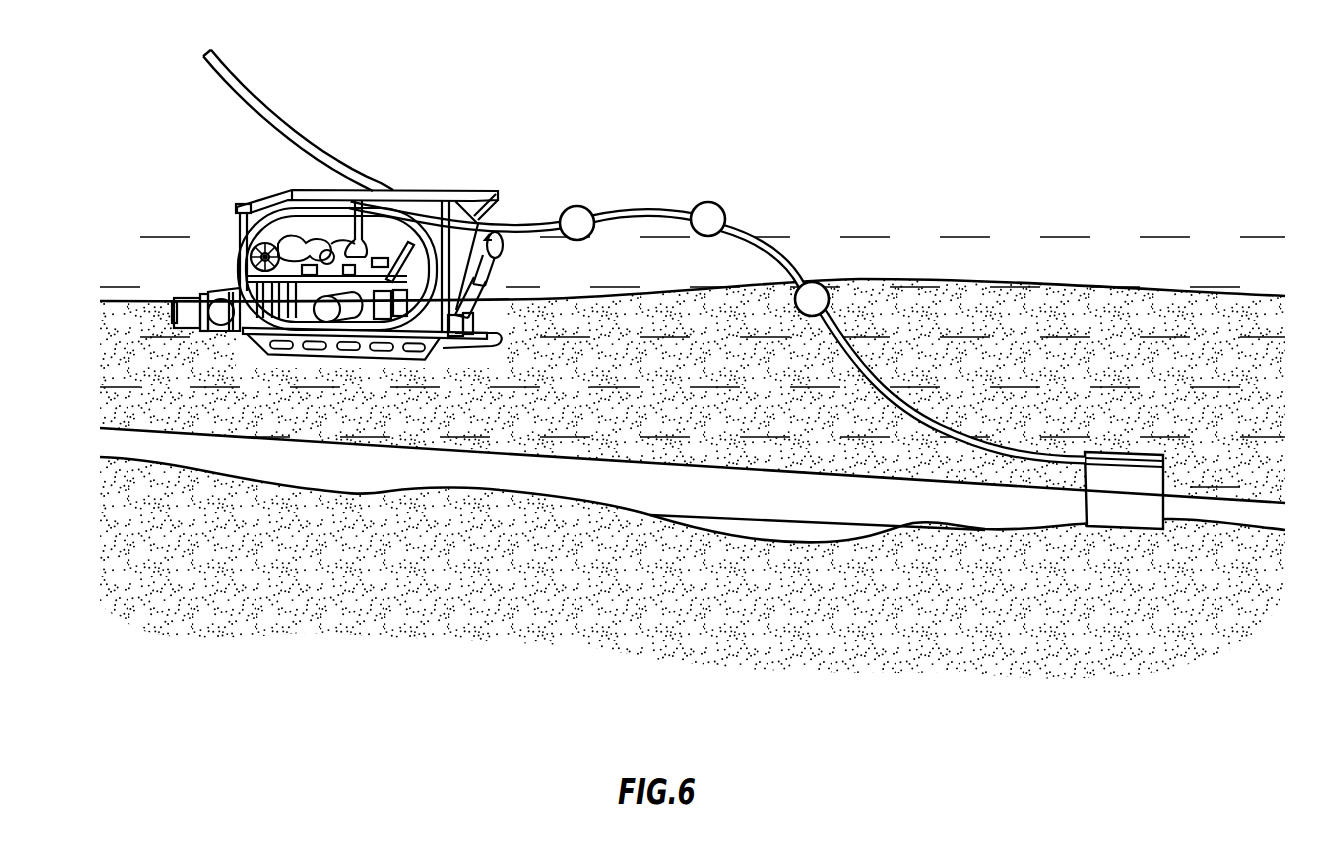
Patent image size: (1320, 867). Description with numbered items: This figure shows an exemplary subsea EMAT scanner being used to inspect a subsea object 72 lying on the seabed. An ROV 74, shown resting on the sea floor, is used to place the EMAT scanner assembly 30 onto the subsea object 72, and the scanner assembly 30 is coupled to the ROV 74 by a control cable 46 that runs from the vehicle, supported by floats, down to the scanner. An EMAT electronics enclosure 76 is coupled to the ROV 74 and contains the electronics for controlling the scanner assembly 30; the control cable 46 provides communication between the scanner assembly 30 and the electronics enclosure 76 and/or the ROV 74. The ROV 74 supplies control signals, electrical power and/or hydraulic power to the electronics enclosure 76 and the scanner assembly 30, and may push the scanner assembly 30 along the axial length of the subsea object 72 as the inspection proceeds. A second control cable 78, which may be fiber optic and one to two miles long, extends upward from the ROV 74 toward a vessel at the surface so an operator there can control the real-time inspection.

The EMAT scanner assembly 30 is at (1110, 455).
The control cable 46 is at (780, 258).
The subsea object 72 is at (1228, 515).
The ROV 74 is at (422, 188).
The EMAT electronics enclosure 76 is at (220, 306).
The second control cable 78 is at (260, 108).